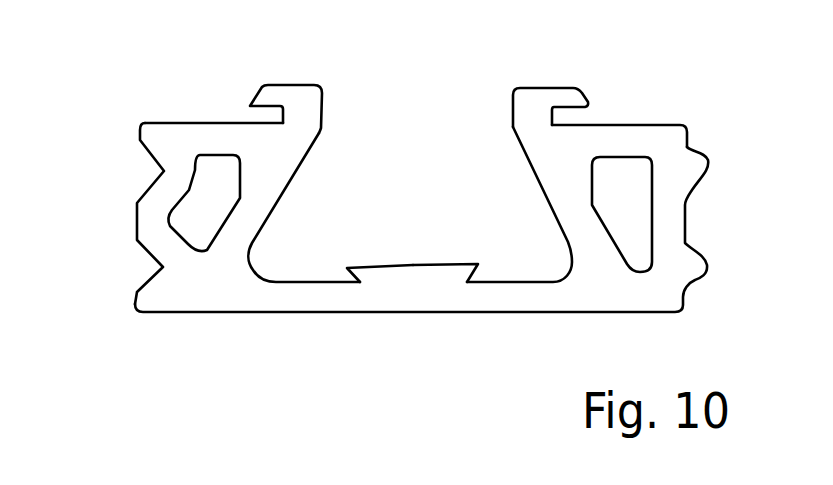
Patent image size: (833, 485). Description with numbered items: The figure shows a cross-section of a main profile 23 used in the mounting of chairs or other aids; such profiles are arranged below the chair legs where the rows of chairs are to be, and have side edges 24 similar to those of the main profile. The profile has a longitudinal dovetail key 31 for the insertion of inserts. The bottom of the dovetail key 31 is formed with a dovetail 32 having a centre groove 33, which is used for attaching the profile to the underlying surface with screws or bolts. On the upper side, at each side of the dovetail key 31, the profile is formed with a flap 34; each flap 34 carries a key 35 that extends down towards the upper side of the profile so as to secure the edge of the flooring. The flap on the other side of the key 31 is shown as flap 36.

The profile rail body 23 is at (712, 219).
The side wall 24 is at (128, 227).
The dovetail key 31 is at (405, 142).
The dovetail 32 is at (473, 247).
The centre groove 33 is at (413, 257).
The flap 34 is at (550, 87).
The key 35 is at (585, 113).
The hook 36 is at (327, 164).